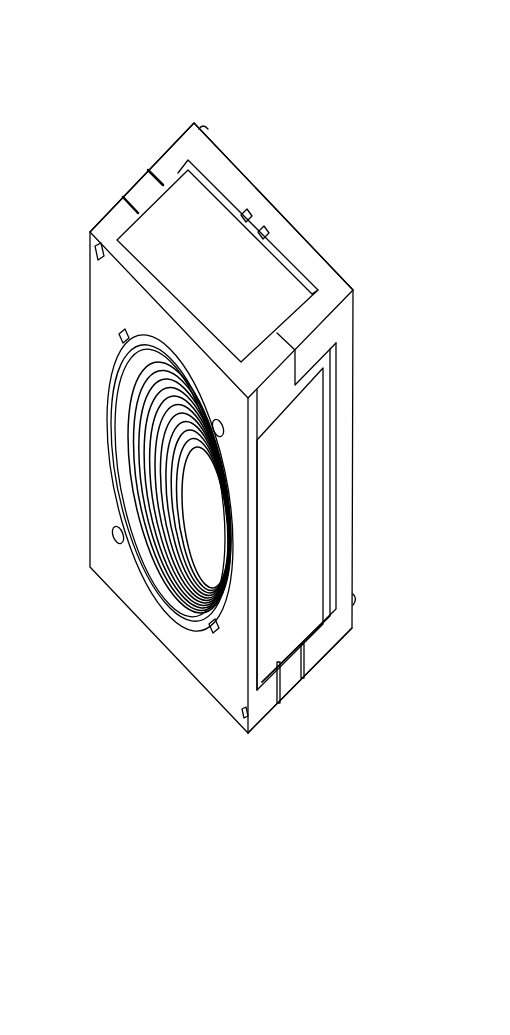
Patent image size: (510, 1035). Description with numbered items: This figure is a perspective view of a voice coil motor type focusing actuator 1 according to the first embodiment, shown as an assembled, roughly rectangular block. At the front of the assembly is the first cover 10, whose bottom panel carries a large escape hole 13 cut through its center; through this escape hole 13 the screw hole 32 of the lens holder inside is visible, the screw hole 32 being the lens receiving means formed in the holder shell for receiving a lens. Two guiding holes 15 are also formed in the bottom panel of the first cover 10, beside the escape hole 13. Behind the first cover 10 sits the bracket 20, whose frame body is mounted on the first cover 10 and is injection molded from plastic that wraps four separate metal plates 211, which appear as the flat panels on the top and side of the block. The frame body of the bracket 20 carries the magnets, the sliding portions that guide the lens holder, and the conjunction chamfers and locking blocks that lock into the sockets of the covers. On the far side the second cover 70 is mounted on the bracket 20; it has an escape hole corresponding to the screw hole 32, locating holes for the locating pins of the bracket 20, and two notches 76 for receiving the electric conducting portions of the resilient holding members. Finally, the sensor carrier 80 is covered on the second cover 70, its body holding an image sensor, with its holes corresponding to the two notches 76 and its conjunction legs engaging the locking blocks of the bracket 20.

The speaker device 1 is at (80, 116).
The first cover 10 is at (82, 394).
The escape hole 13 is at (152, 605).
The guiding holes 15 is at (116, 548).
The bracket 20 is at (121, 163).
The screw hole 32 is at (183, 563).
The second cover 70 is at (324, 676).
The notches 76 is at (262, 230).
The sensor carrier 80 is at (351, 643).
The metal plates 211 is at (178, 205).